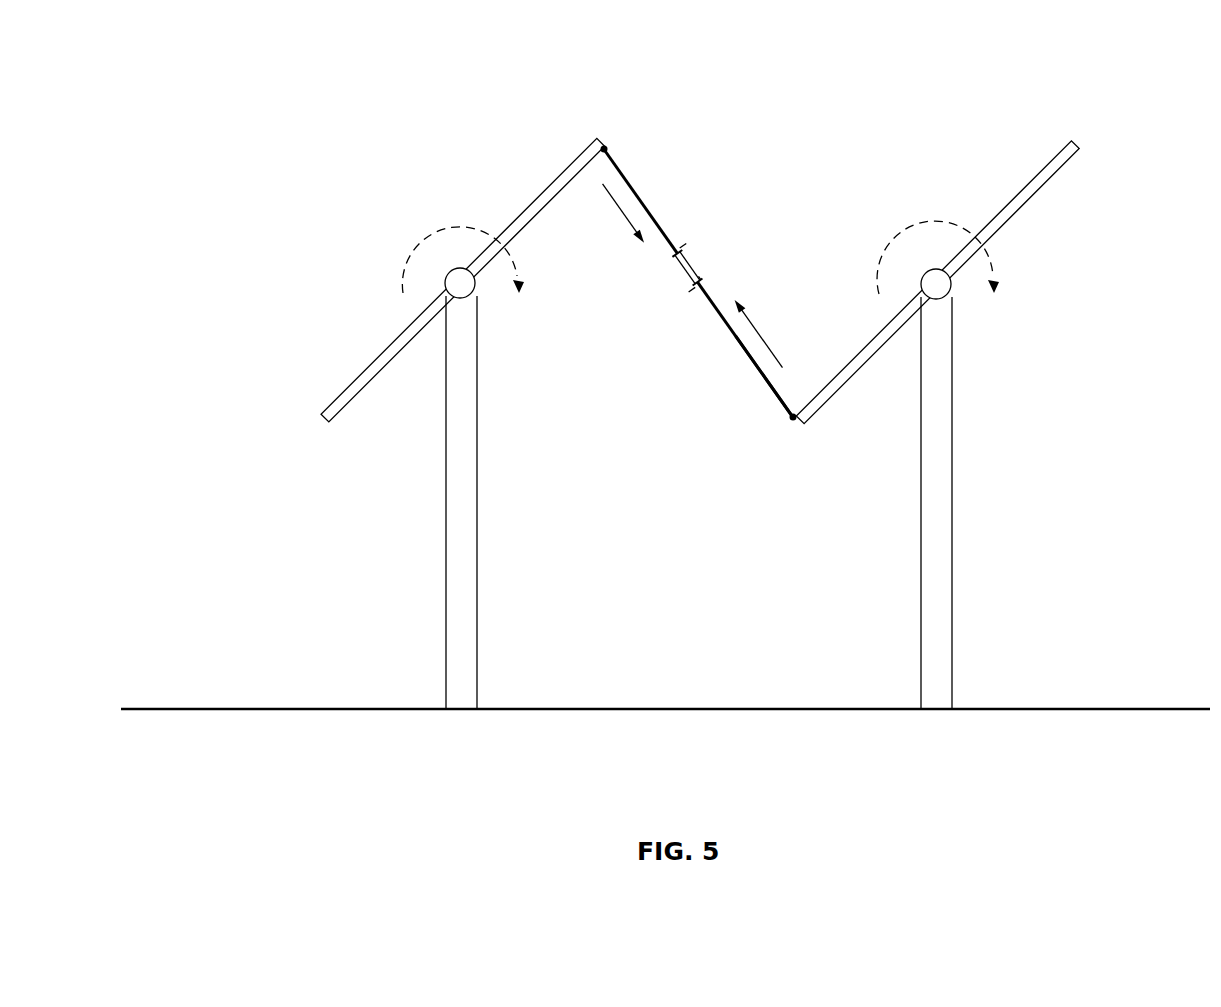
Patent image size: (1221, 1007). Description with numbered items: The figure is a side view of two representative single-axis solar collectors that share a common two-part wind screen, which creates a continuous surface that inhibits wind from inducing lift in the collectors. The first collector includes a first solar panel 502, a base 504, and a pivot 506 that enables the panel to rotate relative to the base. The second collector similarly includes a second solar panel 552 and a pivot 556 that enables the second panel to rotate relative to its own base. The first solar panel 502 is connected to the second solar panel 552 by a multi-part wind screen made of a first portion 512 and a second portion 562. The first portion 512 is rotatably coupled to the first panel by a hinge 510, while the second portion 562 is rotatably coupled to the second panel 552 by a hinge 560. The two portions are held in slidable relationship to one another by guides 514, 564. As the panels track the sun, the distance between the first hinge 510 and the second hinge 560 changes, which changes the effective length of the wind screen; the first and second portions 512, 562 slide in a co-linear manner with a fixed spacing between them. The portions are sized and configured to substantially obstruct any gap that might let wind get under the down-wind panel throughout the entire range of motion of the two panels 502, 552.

The first solar panel 502 is at (372, 358).
The base 504 is at (445, 598).
The pivot 506 is at (448, 273).
The hinge 510 is at (604, 149).
The first portion of the wind screen 512 is at (638, 195).
The guide 514 is at (683, 247).
The second solar panel 552 is at (1043, 165).
The pivot 556 is at (952, 284).
The hinge 560 is at (793, 417).
The second portion of the wind screen 562 is at (748, 352).
The guide 564 is at (692, 284).